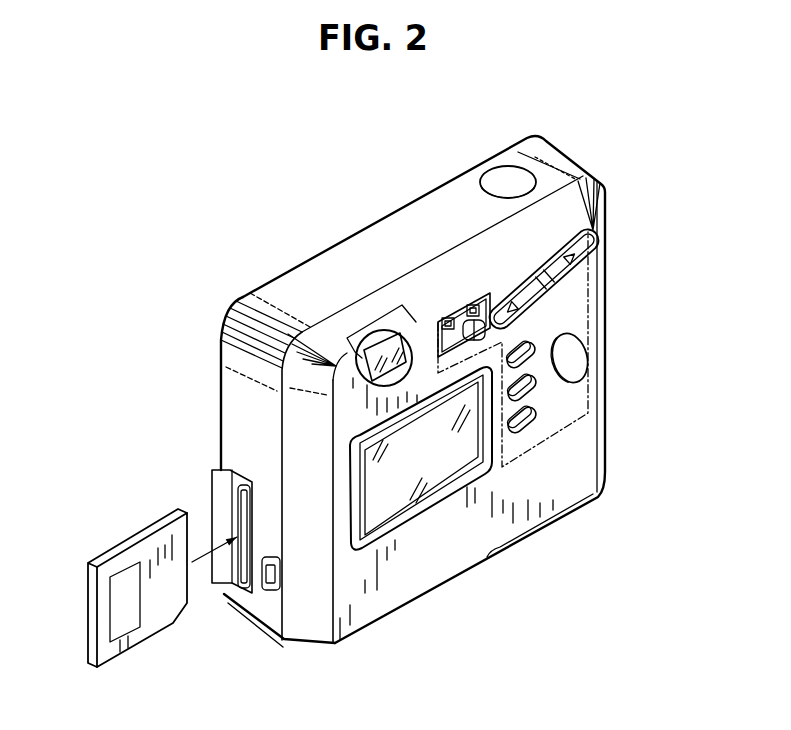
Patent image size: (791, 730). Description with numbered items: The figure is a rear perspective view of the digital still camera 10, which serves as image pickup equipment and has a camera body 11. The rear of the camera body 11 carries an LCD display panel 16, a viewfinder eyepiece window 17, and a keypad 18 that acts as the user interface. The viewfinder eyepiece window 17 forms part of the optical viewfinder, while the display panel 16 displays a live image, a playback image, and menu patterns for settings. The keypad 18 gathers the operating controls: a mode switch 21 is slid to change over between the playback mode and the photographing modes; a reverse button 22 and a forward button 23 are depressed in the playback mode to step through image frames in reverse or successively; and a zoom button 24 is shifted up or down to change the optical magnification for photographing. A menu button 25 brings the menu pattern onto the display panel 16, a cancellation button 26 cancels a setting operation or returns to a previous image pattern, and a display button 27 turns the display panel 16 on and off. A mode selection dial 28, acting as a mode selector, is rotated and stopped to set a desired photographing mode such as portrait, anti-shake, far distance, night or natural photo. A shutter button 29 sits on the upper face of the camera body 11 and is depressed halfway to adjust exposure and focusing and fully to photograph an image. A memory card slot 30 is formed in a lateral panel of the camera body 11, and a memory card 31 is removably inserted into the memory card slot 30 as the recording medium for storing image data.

The digital still camera 10 is at (327, 195).
The camera body 11 is at (580, 162).
The LCD display panel 16 is at (420, 494).
The viewfinder eyepiece window 17 is at (387, 348).
The keypad 18 is at (605, 273).
The mode switch 21 is at (468, 327).
The reverse button 22 is at (507, 316).
The forward button 23 is at (595, 236).
The zoom button 24 is at (543, 287).
The menu button 25 is at (527, 348).
The cancellation button 26 is at (530, 390).
The display button 27 is at (520, 423).
The mode selection dial 28 is at (570, 357).
The shutter button 29 is at (505, 175).
The memory card slot 30 is at (241, 482).
The memory card 31 is at (136, 535).